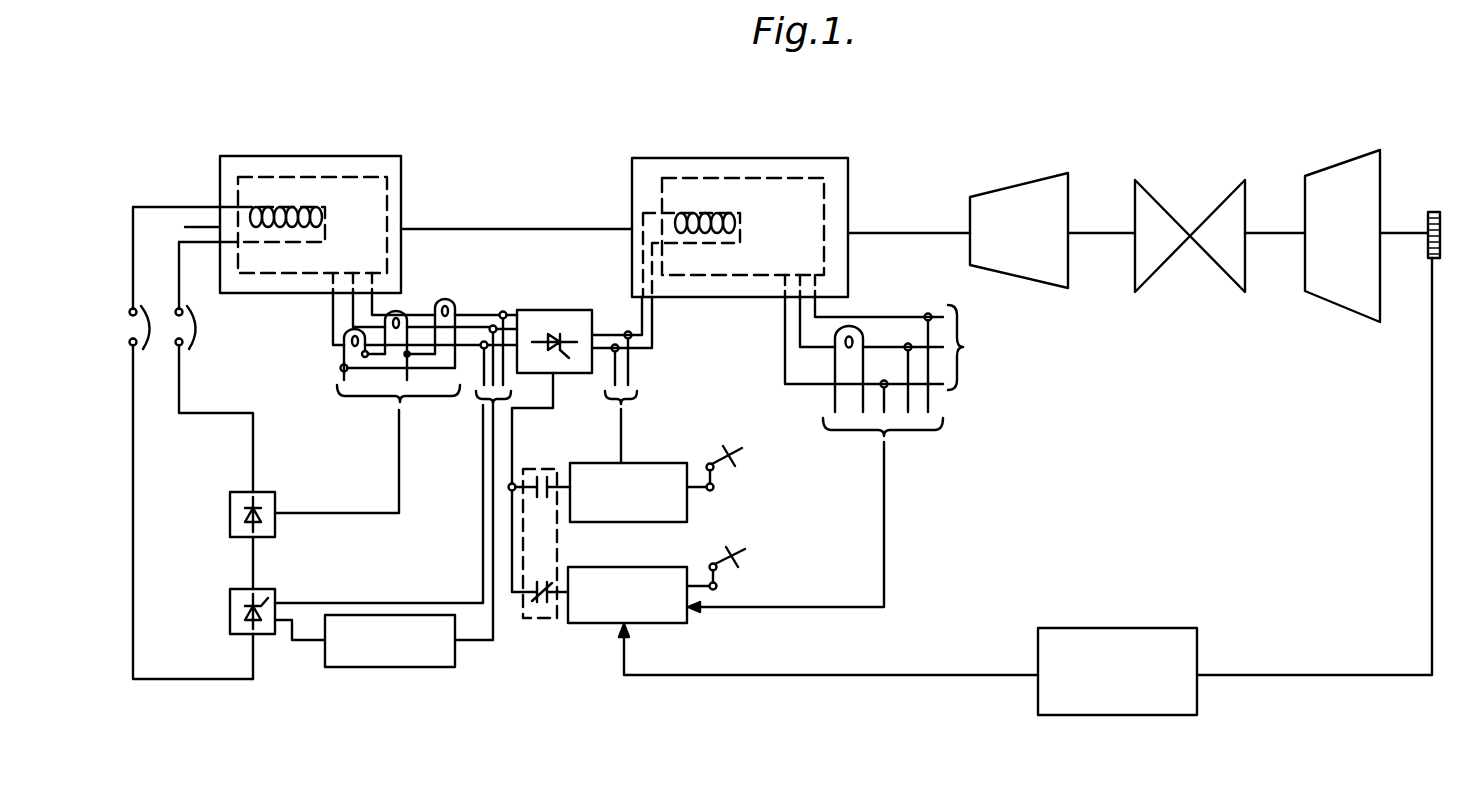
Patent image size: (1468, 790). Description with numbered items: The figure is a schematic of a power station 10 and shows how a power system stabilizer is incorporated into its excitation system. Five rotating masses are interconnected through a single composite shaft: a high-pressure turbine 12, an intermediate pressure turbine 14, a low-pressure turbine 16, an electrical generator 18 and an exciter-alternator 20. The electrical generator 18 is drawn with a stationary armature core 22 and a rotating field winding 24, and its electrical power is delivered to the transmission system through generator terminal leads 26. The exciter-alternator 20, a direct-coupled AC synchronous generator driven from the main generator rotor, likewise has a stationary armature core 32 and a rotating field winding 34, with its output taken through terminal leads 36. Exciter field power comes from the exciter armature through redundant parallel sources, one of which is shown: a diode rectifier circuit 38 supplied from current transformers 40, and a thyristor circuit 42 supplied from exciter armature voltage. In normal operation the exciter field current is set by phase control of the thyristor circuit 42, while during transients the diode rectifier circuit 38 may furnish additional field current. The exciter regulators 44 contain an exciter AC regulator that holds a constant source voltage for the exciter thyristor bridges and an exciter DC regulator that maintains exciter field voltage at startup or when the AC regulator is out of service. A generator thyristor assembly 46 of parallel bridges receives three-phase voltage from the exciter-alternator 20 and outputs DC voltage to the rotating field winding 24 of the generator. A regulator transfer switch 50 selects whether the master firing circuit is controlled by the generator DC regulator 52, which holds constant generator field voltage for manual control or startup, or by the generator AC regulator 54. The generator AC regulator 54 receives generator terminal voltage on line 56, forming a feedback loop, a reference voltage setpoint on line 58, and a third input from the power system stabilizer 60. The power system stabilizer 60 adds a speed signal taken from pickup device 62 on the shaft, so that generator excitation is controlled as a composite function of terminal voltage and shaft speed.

The power station 10 is at (765, 123).
The high-pressure turbine 12 is at (1022, 183).
The intermediate pressure turbine 14 is at (1205, 212).
The low-pressure turbine 16 is at (1345, 158).
The electrical generator 18 is at (785, 158).
The exciter-alternator 20 is at (317, 156).
The stationary armature core 22 is at (812, 178).
The rotating field winding 24 is at (732, 212).
The generator terminal leads 26 is at (818, 288).
The stationary armature core 32 is at (367, 177).
The rotating field winding 34 is at (327, 226).
The terminal leads 36 is at (378, 284).
The diode rectifier circuit 38 is at (267, 492).
The current transformers 40 is at (424, 375).
The thyristor circuit 42 is at (278, 590).
The exciter regulators 44 is at (405, 668).
The generator thyristor assembly 46 is at (560, 310).
The regulator transfer switch 50 is at (543, 466).
The generator DC regulator 52 is at (655, 463).
The generator AC regulator 54 is at (648, 567).
The line 56 is at (881, 483).
The line 58 is at (698, 583).
The power system stabilizer 60 is at (1140, 628).
The pickup device 62 is at (1434, 212).